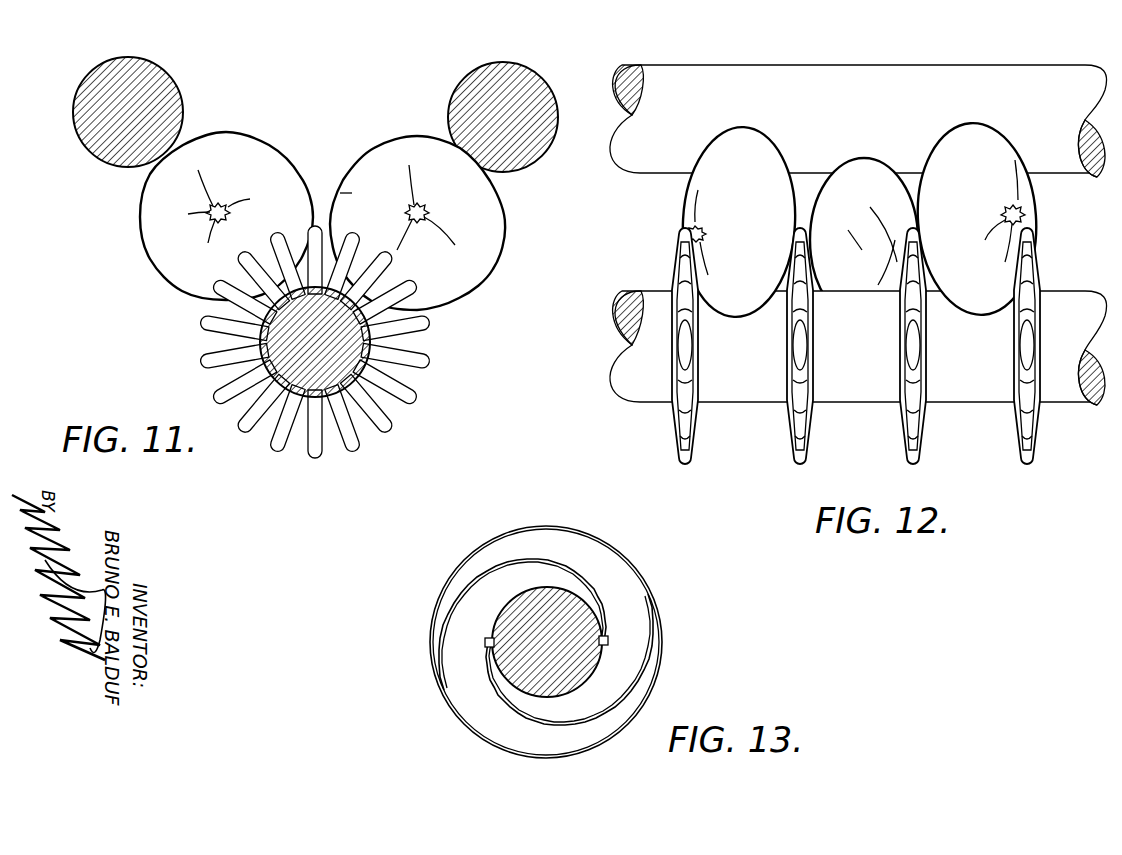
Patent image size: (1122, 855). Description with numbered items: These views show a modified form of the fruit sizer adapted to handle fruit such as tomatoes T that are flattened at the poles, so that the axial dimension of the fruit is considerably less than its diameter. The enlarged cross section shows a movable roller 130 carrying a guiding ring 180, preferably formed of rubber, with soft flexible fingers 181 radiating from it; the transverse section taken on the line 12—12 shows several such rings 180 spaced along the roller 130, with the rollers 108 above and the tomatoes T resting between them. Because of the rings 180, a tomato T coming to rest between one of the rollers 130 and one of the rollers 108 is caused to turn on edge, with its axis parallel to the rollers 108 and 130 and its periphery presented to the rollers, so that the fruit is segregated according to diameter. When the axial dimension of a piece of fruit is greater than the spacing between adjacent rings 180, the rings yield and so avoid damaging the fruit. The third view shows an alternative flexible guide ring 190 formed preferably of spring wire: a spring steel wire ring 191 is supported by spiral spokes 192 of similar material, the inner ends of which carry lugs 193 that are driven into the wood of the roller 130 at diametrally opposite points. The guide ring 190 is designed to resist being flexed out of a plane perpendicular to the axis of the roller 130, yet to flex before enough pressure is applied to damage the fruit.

In FIG. 11, the rollers 108 is at (168, 63).
In FIG. 12, the rollers 108 is at (997, 42).
In FIG. 11, the line 12— 12 is at (511, 195).
In FIG. 11, the movable rollers 130 is at (360, 362).
In FIG. 12, the movable rollers 130 is at (758, 393).
In FIG. 13, the movable rollers 130 is at (516, 604).
In FIG. 11, the guiding rings 180 is at (322, 355).
In FIG. 12, the guiding rings 180 is at (677, 413).
In FIG. 11, the soft flexible fingers 181 is at (356, 453).
In FIG. 13, the flexible guide ring 190 is at (580, 642).
In FIG. 13, the spring steel wire ring 191 is at (627, 560).
In FIG. 13, the spiral spokes 192 is at (587, 722).
In FIG. 13, the lugs 193 is at (486, 640).
In FIG. 11, the tomatoes T is at (283, 138).